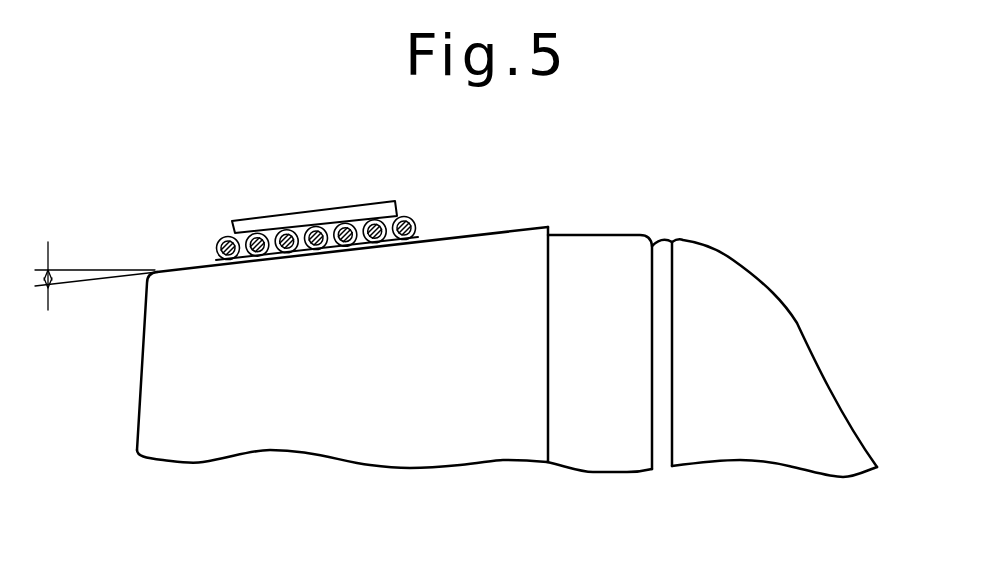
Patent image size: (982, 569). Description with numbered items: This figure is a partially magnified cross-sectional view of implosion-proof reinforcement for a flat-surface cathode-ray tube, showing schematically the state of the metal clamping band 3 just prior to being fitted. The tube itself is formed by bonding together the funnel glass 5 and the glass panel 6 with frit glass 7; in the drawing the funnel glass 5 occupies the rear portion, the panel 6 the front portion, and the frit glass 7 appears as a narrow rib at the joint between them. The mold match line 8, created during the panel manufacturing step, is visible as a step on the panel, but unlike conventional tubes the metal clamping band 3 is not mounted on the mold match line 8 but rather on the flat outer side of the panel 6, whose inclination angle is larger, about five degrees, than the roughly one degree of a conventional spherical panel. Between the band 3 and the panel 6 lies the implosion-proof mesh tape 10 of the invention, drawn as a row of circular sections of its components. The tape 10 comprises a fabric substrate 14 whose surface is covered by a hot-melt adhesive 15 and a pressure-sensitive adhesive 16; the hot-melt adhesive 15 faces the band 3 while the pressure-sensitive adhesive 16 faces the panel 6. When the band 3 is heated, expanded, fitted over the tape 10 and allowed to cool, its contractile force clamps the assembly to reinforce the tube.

The metal clamping band 3 is at (377, 208).
The funnel glass 5 is at (760, 355).
The glass panel 6 is at (460, 298).
The frit glass 7 is at (662, 287).
The mold match line 8 is at (552, 288).
The implosion-proof mesh tape 10 is at (240, 224).
The fabric substrate 14 is at (219, 250).
The hot-melt adhesive 15 is at (220, 243).
The pressure-sensitive adhesive 16 is at (217, 258).